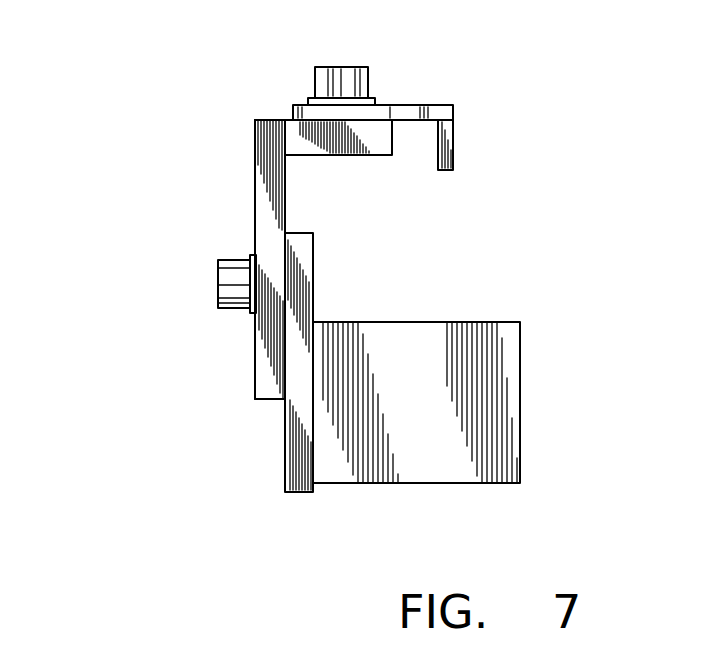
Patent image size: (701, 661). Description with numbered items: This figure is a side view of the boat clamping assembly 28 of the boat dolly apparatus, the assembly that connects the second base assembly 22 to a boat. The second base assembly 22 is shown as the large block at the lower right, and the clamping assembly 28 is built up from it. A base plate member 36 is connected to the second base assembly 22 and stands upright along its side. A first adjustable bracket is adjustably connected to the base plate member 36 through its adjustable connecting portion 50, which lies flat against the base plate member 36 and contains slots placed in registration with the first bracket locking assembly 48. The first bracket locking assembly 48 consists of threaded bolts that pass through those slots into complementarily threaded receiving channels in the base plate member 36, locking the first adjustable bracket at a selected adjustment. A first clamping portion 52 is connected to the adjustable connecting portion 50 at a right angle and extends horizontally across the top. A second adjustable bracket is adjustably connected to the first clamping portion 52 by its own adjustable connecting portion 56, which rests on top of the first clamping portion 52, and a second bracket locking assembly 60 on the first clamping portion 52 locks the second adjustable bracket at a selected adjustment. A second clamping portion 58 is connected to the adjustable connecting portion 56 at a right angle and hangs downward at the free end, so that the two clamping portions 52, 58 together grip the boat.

The second base assembly 22 is at (500, 332).
The clamping assembly 28 is at (222, 134).
The base plate member 36 is at (285, 450).
The first bracket locking assembly 48 is at (233, 284).
The adjustable connecting portion 50 is at (268, 203).
The first clamping portion 52 is at (335, 146).
The adjustable connecting portion 56 is at (407, 110).
The second clamping portion 58 is at (453, 158).
The second bracket locking assembly 60 is at (350, 78).